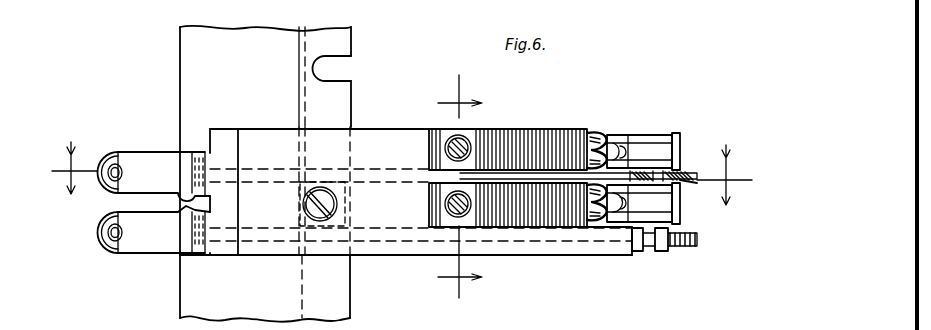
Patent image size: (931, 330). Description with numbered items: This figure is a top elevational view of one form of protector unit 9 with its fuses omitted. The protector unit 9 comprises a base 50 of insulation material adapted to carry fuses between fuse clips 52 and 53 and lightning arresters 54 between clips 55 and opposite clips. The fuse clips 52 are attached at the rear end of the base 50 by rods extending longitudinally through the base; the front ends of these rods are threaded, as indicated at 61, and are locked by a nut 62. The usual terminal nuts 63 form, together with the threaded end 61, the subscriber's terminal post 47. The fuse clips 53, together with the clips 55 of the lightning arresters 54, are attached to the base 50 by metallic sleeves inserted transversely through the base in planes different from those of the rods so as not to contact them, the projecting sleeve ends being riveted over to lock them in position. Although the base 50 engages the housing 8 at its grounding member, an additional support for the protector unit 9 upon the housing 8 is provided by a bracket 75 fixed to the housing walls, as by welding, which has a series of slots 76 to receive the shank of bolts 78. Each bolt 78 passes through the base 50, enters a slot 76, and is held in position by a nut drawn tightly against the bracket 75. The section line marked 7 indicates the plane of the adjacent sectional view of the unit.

The bracket 75 is at (195, 52).
The slot 76 is at (314, 68).
The protector unit 9 is at (208, 126).
The base 50 is at (239, 128).
The fuse clip 52 is at (114, 152).
The bolt 78 is at (340, 205).
The fuse clip 53 is at (590, 140).
The lightning arrester 54 is at (648, 136).
The lightning arrester clip 55 is at (622, 172).
The threaded end 61 is at (690, 173).
The subscriber's terminal post 47 is at (690, 184).
The nut 62 is at (636, 252).
The terminal nut 63 is at (662, 252).
The section line 7- 7 is at (394, 173).
The housing 8 is at (460, 188).